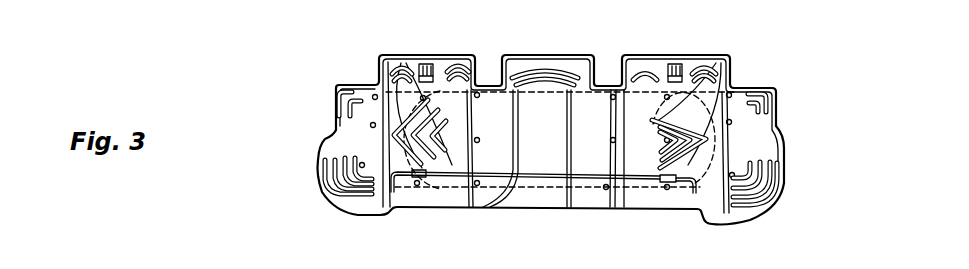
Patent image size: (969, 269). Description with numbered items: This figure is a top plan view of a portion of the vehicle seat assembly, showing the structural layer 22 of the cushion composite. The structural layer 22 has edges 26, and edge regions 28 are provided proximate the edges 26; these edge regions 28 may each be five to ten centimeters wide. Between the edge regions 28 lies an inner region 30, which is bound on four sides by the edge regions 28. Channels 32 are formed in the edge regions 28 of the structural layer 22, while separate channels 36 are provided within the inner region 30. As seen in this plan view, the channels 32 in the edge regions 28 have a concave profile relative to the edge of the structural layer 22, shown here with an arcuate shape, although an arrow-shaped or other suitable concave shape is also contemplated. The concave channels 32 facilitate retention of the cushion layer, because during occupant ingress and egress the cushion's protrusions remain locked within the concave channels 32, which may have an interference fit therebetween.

The structural layer 22 is at (731, 64).
The edges 26 is at (321, 142).
The edge regions 28 is at (338, 126).
The inner region 30 is at (604, 85).
The channels 32 is at (353, 93).
The channels 36 is at (406, 63).